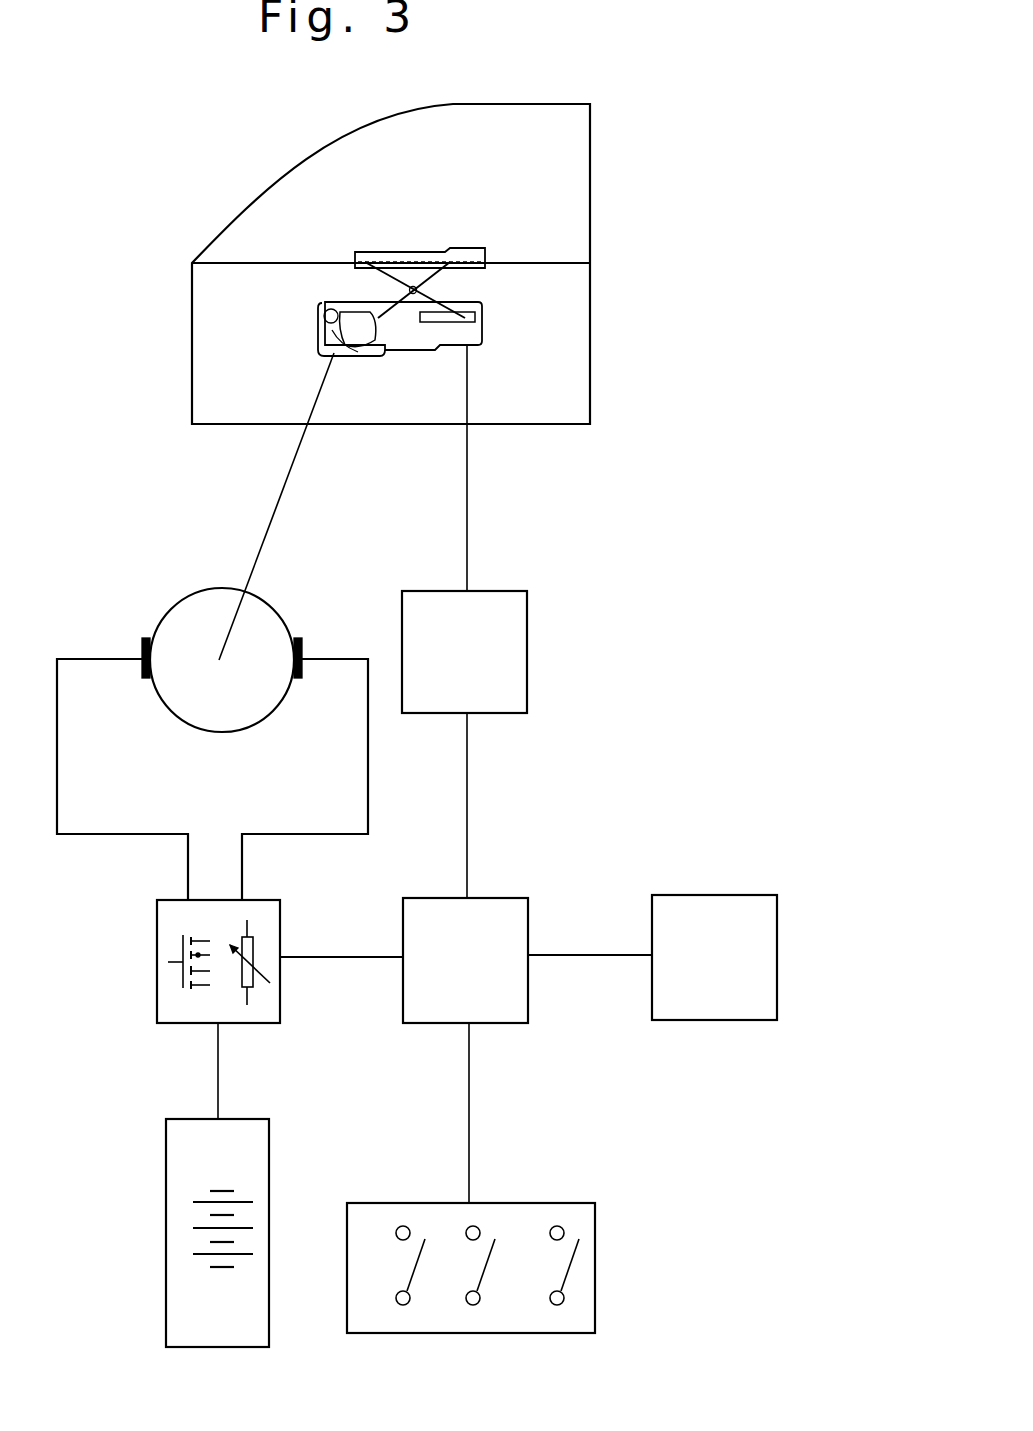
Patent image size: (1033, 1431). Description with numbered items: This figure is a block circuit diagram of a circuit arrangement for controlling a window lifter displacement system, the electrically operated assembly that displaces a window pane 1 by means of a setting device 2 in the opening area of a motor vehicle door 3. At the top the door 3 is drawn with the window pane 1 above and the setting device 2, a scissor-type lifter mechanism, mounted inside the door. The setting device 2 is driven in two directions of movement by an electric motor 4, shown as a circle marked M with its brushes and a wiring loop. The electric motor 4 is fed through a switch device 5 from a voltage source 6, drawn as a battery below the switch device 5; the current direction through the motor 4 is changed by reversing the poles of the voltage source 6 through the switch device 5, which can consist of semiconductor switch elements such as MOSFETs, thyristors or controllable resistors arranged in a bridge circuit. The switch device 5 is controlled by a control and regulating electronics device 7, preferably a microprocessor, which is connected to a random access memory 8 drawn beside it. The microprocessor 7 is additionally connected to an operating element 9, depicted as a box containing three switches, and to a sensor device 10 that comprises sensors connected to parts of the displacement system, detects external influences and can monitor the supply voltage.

The window pane 1 is at (478, 210).
The setting device 2 is at (470, 283).
The motor vehicle door 3 is at (515, 425).
The electric motor 4 is at (207, 617).
The switch device 5 is at (162, 918).
The voltage source 6 is at (185, 1313).
The control and regulating electronics device 7 is at (469, 868).
The random access memory 8 is at (695, 997).
The operating element 9 is at (580, 1287).
The sensor device 10 is at (502, 620).